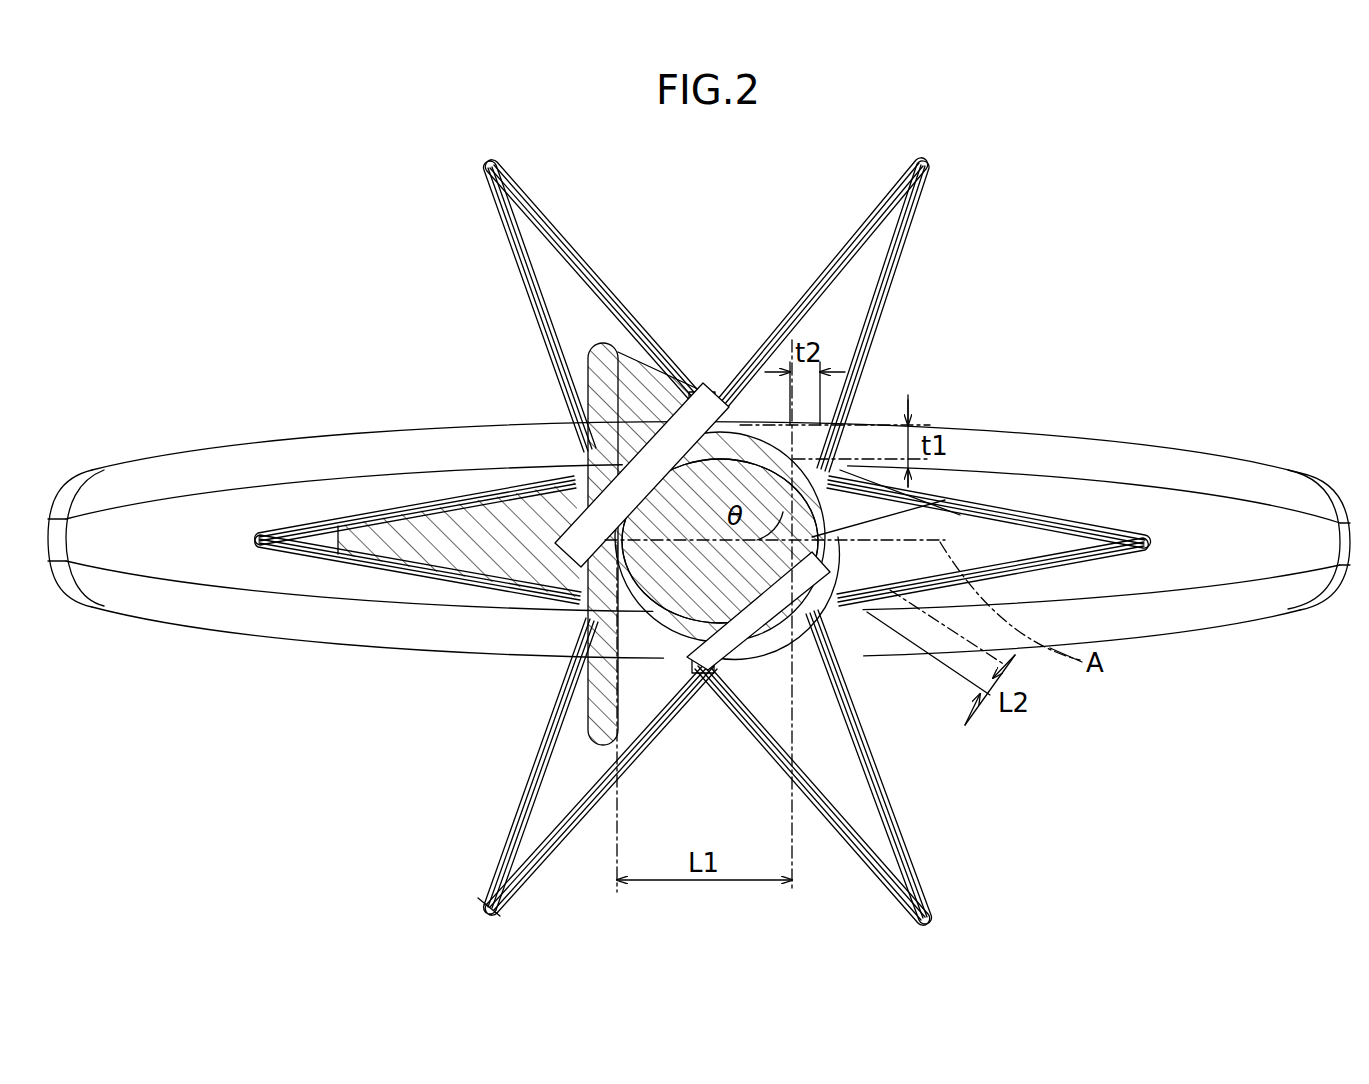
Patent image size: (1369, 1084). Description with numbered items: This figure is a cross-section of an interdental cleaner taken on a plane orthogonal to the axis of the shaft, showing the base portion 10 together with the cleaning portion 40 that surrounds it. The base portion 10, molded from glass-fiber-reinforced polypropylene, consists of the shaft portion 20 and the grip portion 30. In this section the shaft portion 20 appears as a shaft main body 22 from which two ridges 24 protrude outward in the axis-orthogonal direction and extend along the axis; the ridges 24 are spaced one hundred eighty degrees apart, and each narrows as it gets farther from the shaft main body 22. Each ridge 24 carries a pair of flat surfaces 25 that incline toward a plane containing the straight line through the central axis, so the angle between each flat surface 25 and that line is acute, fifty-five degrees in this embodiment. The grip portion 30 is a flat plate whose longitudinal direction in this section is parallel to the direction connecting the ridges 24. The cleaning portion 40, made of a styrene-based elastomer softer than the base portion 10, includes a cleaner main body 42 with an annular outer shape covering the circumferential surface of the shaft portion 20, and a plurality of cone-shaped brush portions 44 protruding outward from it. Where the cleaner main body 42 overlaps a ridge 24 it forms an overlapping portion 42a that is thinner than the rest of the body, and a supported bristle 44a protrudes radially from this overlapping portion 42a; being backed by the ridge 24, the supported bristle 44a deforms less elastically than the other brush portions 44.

The base portion 10 is at (517, 353).
The grip portion 30 is at (335, 457).
The shaft portion 20 is at (578, 435).
The shaft main body 22 is at (596, 665).
The ridges 24 is at (366, 655).
The flat surfaces 25 is at (572, 552).
The cleaning portion 40 is at (750, 278).
The cleaner main body 42 is at (706, 405).
The brush portions 44 is at (625, 392).
The overlapping portion 42a is at (825, 532).
The supported bristle 44a is at (960, 515).